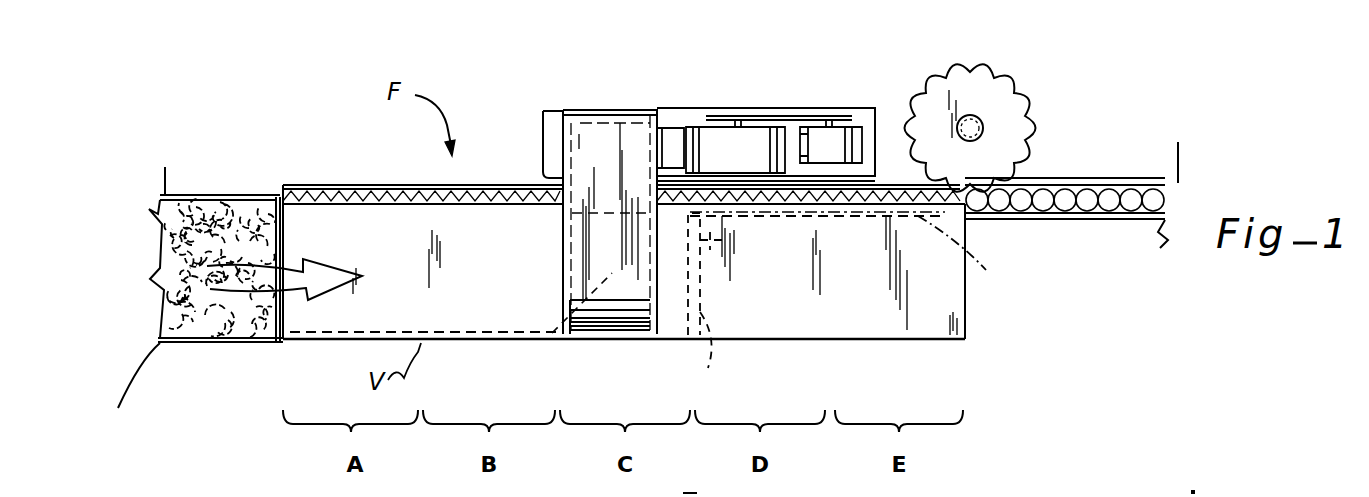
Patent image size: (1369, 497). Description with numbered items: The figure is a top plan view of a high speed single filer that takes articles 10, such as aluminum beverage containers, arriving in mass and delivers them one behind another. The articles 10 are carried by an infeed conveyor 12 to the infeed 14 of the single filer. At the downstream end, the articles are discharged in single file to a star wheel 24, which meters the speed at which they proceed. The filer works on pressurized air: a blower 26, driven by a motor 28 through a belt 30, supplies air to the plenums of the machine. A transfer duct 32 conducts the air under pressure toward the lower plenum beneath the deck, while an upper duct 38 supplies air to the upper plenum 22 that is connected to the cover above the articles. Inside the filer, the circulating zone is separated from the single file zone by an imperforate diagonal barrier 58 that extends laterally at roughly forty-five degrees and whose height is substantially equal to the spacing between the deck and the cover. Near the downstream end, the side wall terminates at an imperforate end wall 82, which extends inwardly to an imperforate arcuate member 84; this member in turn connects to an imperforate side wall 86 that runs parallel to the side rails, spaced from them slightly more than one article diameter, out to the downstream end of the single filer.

The articles 10 is at (196, 346).
The infeed conveyor 12 is at (139, 394).
The infeed 14 is at (258, 345).
The upper plenum 22 is at (483, 333).
The star wheel 24 is at (1010, 115).
The blower 26 is at (730, 146).
The motor 28 is at (850, 138).
The belt 30 is at (796, 120).
The transfer duct 32 is at (672, 140).
The upper duct 38 is at (594, 268).
The imperforate diagonal barrier 58 is at (632, 350).
The imperforate end wall 82 is at (725, 350).
The imperforate arcuate member 84 is at (712, 238).
The imperforate side wall 86 is at (969, 252).